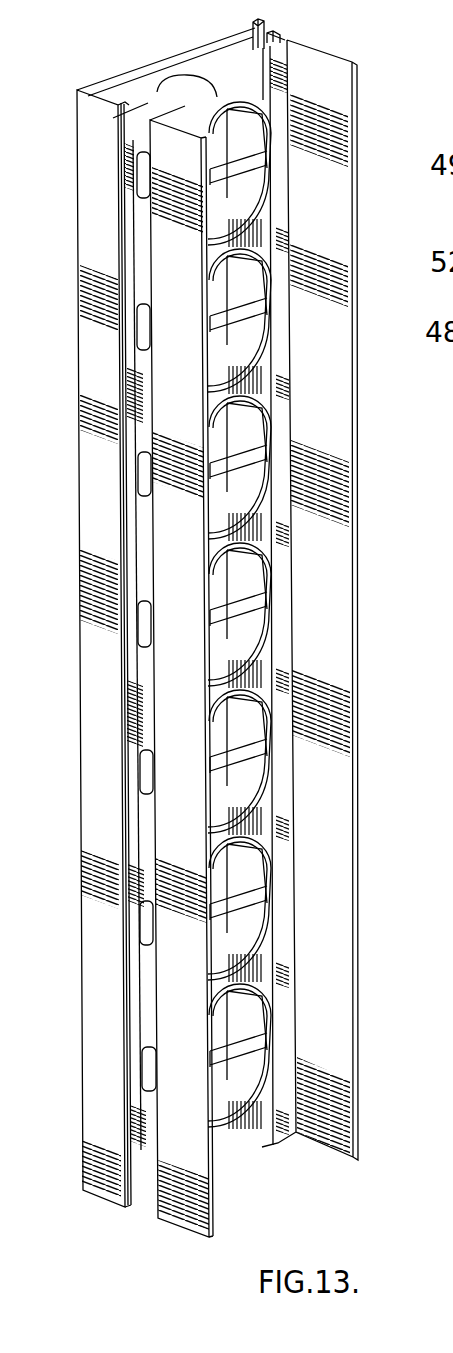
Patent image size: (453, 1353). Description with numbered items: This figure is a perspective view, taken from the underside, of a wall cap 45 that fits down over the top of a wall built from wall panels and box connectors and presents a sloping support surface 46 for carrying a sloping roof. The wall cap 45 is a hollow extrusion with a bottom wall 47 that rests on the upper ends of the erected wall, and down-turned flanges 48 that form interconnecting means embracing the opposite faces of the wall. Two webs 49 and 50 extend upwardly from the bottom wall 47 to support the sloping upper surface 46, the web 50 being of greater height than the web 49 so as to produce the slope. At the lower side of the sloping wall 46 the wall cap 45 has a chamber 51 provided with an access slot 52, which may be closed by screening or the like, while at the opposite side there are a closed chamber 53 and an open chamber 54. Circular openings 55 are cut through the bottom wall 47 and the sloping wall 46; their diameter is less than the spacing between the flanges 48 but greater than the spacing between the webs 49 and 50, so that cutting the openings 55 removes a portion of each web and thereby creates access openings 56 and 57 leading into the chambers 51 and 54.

The wall cap 45 is at (452, 100).
The sloping support surface 46 is at (143, 63).
The bottom wall 47 is at (268, 660).
The down-turned flanges 48 is at (343, 885).
The web 49 is at (223, 60).
The web 50 is at (113, 118).
The chamber 51 is at (263, 22).
The access slot 52 is at (283, 35).
The closed chamber 53 is at (97, 85).
The open chamber 54 is at (128, 215).
The circular openings 55 is at (268, 848).
The access opening 56 is at (283, 297).
The access opening 57 is at (140, 747).